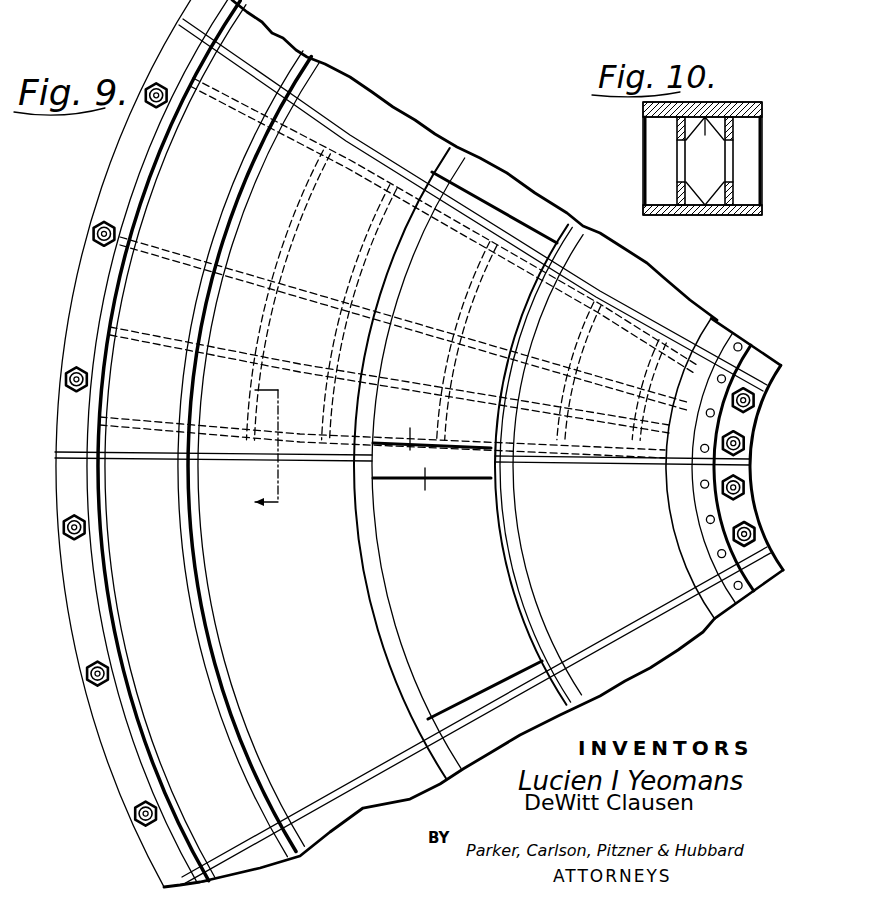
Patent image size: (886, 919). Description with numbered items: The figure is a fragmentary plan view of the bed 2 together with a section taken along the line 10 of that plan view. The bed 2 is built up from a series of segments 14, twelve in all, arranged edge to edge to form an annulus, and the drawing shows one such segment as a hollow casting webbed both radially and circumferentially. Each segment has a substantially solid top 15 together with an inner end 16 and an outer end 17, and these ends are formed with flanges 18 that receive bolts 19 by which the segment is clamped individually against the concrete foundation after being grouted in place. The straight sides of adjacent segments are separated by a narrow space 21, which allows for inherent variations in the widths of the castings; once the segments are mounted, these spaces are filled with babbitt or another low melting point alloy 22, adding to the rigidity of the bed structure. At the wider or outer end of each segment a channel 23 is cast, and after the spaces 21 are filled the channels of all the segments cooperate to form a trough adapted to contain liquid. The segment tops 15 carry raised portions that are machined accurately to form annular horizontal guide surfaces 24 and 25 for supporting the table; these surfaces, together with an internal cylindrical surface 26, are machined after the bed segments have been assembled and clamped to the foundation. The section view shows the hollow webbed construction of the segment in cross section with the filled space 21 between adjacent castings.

In FIG. 9, the hollow panel structure 2 is at (357, 826).
In FIG. 10, the hollow panel structure 2 is at (645, 120).
In FIG. 9, the section line 10 is at (281, 447).
In FIG. 9, the segment 14 is at (690, 265).
In FIG. 10, the segment 14 is at (680, 215).
In FIG. 10, the top 15 is at (742, 108).
In FIG. 9, the inner end 16 is at (712, 526).
In FIG. 9, the outer end 17 is at (141, 181).
In FIG. 9, the flange 18 is at (82, 293).
In FIG. 9, the bolt 19 is at (94, 240).
In FIG. 9, the space 21 is at (176, 26).
In FIG. 10, the space 21 is at (705, 205).
In FIG. 9, the low melting point alloy 22 is at (264, 72).
In FIG. 10, the low melting point alloy 22 is at (707, 102).
In FIG. 9, the channel 23 is at (158, 712).
In FIG. 9, the guide surface 24 is at (365, 153).
In FIG. 10, the guide surface 24 is at (762, 103).
In FIG. 9, the guide surface 25 is at (612, 255).
In FIG. 9, the internal cylindrical surface 26 is at (750, 362).